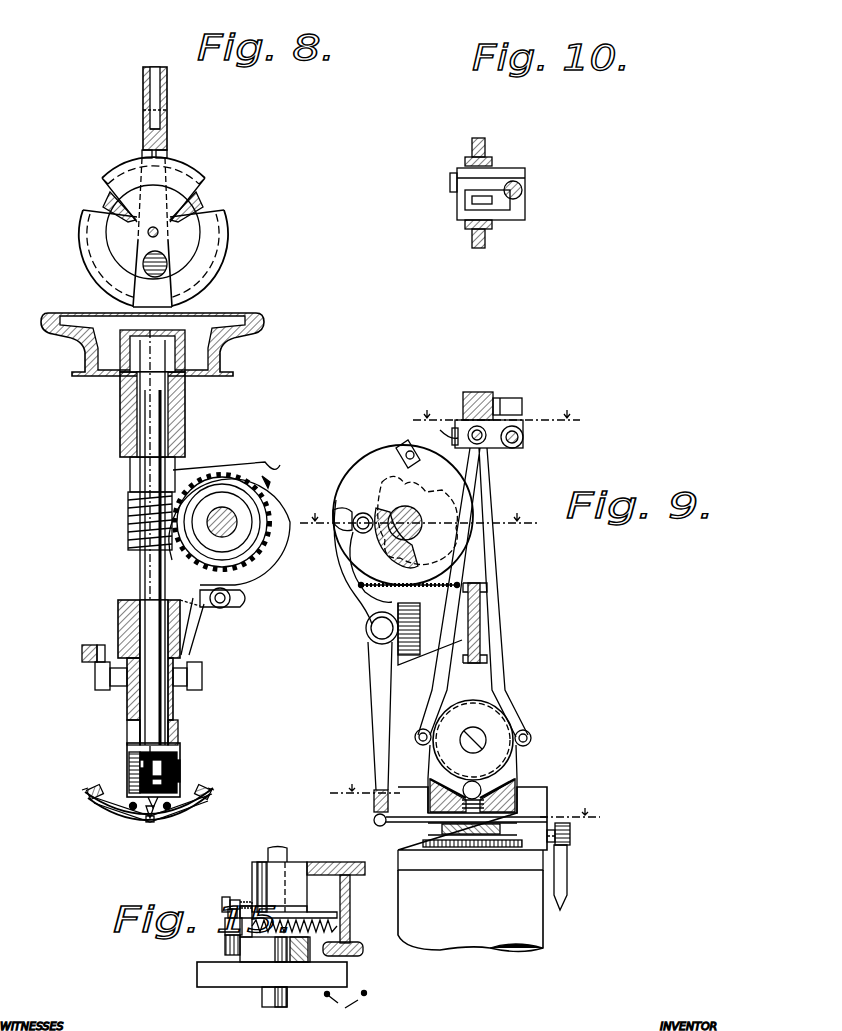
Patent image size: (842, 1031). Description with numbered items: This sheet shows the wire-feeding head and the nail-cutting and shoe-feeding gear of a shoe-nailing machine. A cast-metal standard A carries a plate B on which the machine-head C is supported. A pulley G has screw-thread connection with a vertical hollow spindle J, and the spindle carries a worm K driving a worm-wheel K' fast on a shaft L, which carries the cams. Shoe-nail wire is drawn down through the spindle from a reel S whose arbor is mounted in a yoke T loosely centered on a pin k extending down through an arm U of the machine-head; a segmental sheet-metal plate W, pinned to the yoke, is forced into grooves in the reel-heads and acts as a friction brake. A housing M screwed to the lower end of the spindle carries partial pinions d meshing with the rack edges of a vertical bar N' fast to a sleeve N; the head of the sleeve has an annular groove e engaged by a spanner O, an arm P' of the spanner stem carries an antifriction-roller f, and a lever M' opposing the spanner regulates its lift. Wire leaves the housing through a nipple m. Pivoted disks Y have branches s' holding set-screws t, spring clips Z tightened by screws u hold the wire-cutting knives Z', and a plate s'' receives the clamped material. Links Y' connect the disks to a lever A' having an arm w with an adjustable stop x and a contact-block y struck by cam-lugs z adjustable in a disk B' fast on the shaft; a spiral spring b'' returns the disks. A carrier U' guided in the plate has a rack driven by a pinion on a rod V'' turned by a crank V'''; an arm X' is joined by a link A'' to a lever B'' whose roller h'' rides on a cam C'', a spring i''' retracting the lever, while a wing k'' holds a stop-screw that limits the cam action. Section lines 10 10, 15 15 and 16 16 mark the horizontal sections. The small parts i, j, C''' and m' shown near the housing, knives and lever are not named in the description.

In FIG. 8, the arm of the machine-head U is at (172, 108).
In FIG. 8, the pin k is at (135, 138).
In FIG. 8, the yoke T is at (170, 153).
In FIG. 8, the reel S is at (206, 240).
In FIG. 8, the segmental sheet-metal plate W is at (98, 194).
In FIG. 8, the pulley G is at (222, 356).
In FIG. 8, the vertical hollow spindle J is at (150, 446).
In FIG. 8, the worm K is at (133, 521).
In FIG. 8, the worm-wheel K' is at (229, 510).
In FIG. 8, the arm of the stem P' is at (234, 600).
In FIG. 8, the antifriction-roller f is at (228, 618).
In FIG. 8, the lever M' is at (82, 636).
In FIG. 8, the spanner O is at (98, 689).
In FIG. 8, the annular groove e is at (124, 680).
In FIG. 8, the sleeve N is at (120, 730).
In FIG. 8, the vertical rack bar N' is at (190, 726).
In FIG. 8, the housing M is at (140, 770).
In FIG. 8, the insert i is at (150, 750).
In FIG. 8, the partial pinion d is at (178, 760).
In FIG. 8, the pin j is at (140, 765).
In FIG. 8, the wire-cutting knife Z' is at (150, 794).
In FIG. 8, the branch of the offset-arm s' is at (149, 781).
In FIG. 8, the clip-holding screw u is at (128, 800).
In FIG. 8, the set-screw t is at (92, 795).
In FIG. 8, the clip Z is at (149, 820).
In FIG. 8, the plate s'' is at (154, 823).
In FIG. 8, the nipple m is at (147, 838).
In FIG. 10, the machine-head C is at (478, 211).
In FIG. 9, the machine-head C is at (508, 623).
In FIG. 15, the machine-head C is at (338, 909).
In FIG. 10, the lever A' is at (491, 170).
In FIG. 9, the lever A' is at (481, 449).
In FIG. 10, the contact-block y is at (450, 184).
In FIG. 9, the contact-block y is at (452, 436).
In FIG. 10, the arm of the lever w is at (522, 190).
In FIG. 9, the arm of the lever w is at (530, 433).
In FIG. 10, the link Y' is at (465, 206).
In FIG. 9, the link Y' is at (476, 592).
In FIG. 15, the link Y' is at (346, 1005).
In FIG. 9, the stop x is at (500, 398).
In FIG. 9, the section line 10 10 is at (503, 418).
In FIG. 9, the cam-lug z is at (405, 446).
In FIG. 15, the cam-lug z is at (287, 992).
In FIG. 9, the disk B' is at (403, 534).
In FIG. 15, the disk B' is at (272, 974).
In FIG. 9, the antifriction-roller h'' is at (339, 516).
In FIG. 15, the antifriction-roller h'' is at (217, 936).
In FIG. 9, the section line 15 15 is at (421, 522).
In FIG. 9, the shaft L is at (424, 520).
In FIG. 15, the shaft L is at (280, 856).
In FIG. 9, the pawl C''' is at (364, 538).
In FIG. 9, the spiral spring i''' is at (409, 573).
In FIG. 15, the spiral spring i''' is at (294, 907).
In FIG. 9, the lever B'' is at (369, 719).
In FIG. 15, the lever B'' is at (235, 889).
In FIG. 9, the disk Y is at (473, 740).
In FIG. 9, the spiral spring b'' is at (472, 784).
In FIG. 9, the section line 16 16 is at (469, 804).
In FIG. 9, the plate B is at (489, 822).
In FIG. 9, the link A'' is at (461, 846).
In FIG. 9, the carrier U' is at (472, 856).
In FIG. 9, the arm X' is at (472, 873).
In FIG. 9, the rod V'' is at (545, 843).
In FIG. 9, the crank V''' is at (576, 877).
In FIG. 9, the standard A is at (470, 911).
In FIG. 15, the block m' is at (288, 909).
In FIG. 15, the cam C'' is at (275, 949).
In FIG. 15, the wing k'' is at (239, 899).